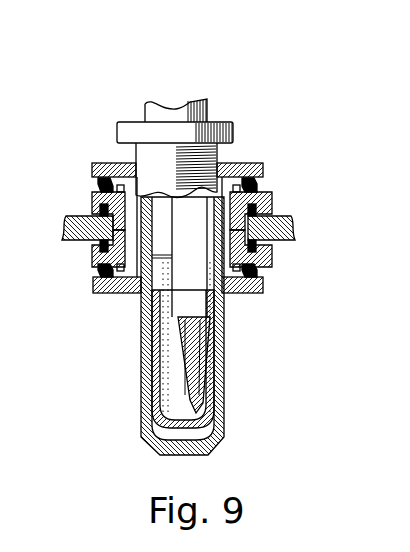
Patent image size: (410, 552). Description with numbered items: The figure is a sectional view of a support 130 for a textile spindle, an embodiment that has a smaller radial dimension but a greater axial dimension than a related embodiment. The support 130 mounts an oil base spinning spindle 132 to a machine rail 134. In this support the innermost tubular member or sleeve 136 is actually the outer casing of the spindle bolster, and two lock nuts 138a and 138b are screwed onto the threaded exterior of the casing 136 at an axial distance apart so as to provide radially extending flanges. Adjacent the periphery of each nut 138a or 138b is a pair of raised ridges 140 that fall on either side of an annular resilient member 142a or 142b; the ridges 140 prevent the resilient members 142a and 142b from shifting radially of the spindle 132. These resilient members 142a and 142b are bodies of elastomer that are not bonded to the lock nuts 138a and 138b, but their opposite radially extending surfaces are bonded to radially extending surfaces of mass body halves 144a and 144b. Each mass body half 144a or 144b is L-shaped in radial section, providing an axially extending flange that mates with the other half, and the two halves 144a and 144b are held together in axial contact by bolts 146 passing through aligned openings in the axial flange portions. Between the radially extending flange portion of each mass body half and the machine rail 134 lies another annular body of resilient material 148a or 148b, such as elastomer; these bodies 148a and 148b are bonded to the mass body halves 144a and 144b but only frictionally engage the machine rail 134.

The support 130 is at (225, 103).
The oil base spinning spindle 132 is at (224, 418).
The machine rail 134 is at (292, 232).
The innermost tubular member or sleeve 136 is at (144, 356).
The lock nut 138a is at (247, 163).
The lock nut 138b is at (252, 293).
The raised ridges 140 is at (98, 181).
The annular resilient member 142a is at (253, 183).
The annular resilient member 142b is at (258, 282).
The mass body half 144a is at (92, 197).
The mass body half 144b is at (93, 262).
The bolts 146 is at (123, 293).
The annular body of resilient material 148a is at (272, 215).
The annular body of resilient material 148b is at (260, 262).